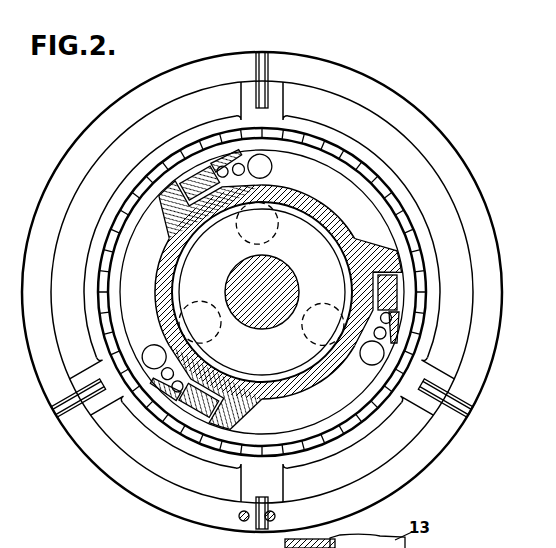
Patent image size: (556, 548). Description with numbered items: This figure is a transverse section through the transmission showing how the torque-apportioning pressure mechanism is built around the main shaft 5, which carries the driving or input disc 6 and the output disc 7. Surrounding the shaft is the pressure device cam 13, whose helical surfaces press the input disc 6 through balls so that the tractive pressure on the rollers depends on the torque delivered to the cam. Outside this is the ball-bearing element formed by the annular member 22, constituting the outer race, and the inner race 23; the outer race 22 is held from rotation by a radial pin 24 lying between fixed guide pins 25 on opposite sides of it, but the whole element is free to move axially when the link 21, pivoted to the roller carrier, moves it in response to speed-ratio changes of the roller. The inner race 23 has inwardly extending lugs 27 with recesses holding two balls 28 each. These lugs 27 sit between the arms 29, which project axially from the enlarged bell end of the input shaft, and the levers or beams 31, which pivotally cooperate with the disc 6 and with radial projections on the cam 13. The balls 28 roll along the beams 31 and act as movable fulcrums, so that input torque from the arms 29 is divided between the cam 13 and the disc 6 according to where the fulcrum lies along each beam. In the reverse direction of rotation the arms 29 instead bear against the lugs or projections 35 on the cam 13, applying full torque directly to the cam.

The main shaft 5 is at (285, 283).
The driving or input disc 6 is at (357, 115).
The output disc 7 is at (411, 118).
The pressure device cam 13 is at (333, 220).
The link 21 is at (264, 68).
The annular member (outer race) 22 is at (108, 213).
The inner race 23 is at (130, 231).
The radial pin 24 is at (258, 520).
The fixed guide pins 25 is at (240, 513).
The lugs 27 is at (232, 185).
The balls 28 is at (230, 163).
The arms 29 is at (186, 176).
The levers or beams 31 is at (277, 166).
The lugs or projections 35 is at (163, 193).